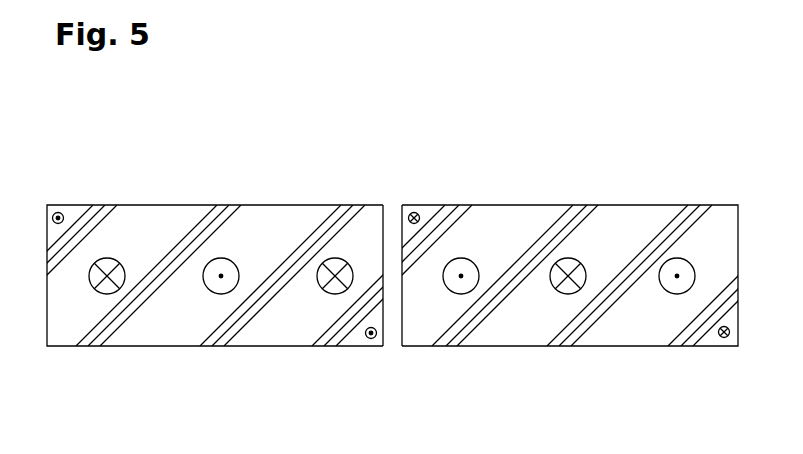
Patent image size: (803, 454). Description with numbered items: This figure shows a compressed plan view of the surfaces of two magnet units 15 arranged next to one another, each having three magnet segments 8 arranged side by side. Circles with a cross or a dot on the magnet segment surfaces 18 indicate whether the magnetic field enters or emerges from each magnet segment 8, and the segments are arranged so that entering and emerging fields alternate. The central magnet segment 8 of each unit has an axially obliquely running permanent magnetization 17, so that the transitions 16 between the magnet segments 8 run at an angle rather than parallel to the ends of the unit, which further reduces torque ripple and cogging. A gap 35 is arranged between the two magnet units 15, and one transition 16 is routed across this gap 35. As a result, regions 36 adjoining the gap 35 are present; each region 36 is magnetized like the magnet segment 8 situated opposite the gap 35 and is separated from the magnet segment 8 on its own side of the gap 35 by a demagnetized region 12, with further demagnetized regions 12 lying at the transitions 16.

The magnet segment 8 is at (63, 347).
The demagnetized region 12 is at (100, 207).
The magnet unit 15 is at (255, 142).
The transition 16 is at (80, 212).
The permanent magnetization 17 is at (163, 207).
The magnet segment surface 18 is at (130, 207).
The gap 35 is at (392, 343).
The region 36 is at (486, 210).